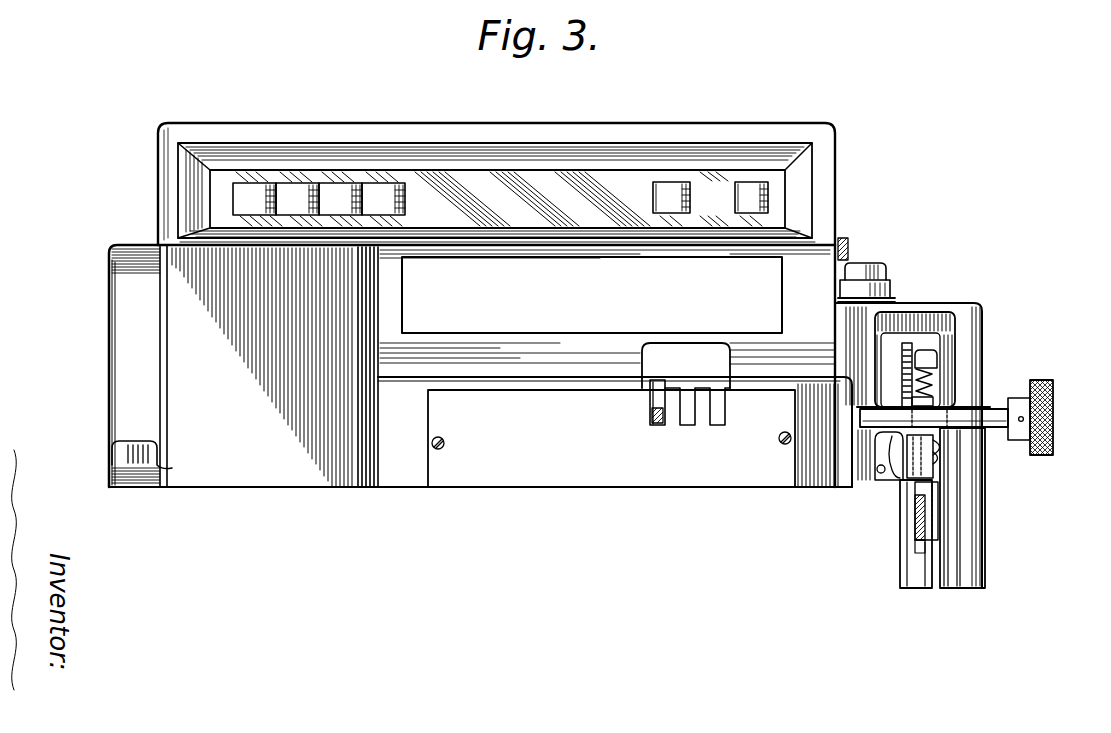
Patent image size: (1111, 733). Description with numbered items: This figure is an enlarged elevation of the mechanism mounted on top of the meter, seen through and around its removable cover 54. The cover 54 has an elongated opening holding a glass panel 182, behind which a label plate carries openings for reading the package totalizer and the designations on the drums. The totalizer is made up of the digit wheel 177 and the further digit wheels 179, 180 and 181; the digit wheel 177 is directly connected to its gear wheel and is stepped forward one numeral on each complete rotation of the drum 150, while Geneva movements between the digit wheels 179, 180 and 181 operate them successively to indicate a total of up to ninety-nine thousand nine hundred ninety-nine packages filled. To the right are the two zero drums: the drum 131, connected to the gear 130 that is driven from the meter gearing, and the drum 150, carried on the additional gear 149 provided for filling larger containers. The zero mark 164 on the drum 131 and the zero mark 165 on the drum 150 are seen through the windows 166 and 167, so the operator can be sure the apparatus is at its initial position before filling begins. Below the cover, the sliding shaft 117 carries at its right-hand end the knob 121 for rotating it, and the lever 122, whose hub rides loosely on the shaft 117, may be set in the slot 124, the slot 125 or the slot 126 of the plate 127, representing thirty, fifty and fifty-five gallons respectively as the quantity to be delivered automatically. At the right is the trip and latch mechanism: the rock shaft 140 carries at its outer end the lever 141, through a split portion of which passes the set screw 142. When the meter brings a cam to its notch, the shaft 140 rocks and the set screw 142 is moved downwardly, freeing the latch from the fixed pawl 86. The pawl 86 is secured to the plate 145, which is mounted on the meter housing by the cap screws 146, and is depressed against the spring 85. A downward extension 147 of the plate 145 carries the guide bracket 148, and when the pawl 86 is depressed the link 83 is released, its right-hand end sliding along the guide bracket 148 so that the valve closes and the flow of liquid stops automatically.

The removable cover 54 is at (493, 119).
The digit wheel 181 is at (252, 185).
The digit wheel 180 is at (300, 183).
The digit wheel 179 is at (335, 185).
The digit wheel 177 is at (375, 183).
The glass panel 182 is at (431, 178).
The drum 150 is at (658, 188).
The window 167 is at (670, 183).
The zero mark 165 is at (677, 183).
The gear 149 is at (688, 215).
The drum 131 is at (757, 183).
The window 166 is at (773, 189).
The zero mark 164 is at (768, 198).
The gear 130 is at (767, 215).
The plate 145 is at (900, 352).
The set screw 142 is at (914, 399).
The spring 85 is at (932, 384).
The sliding shaft 117 is at (996, 412).
The knob 121 is at (1053, 393).
The slot 124 is at (653, 398).
The lever 122 is at (653, 417).
The slot 125 is at (682, 418).
The slot 126 is at (720, 412).
The plate 127 is at (473, 460).
The lever 141 is at (940, 443).
The fixed pawl 86 is at (942, 466).
The cap screws 146 is at (884, 480).
The rock shaft 140 is at (898, 482).
The downward extension 147 is at (912, 529).
The link 83 is at (918, 535).
The guide bracket 148 is at (920, 578).